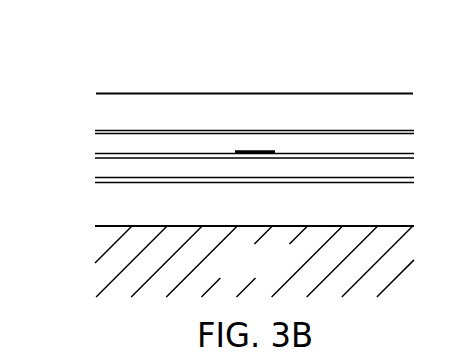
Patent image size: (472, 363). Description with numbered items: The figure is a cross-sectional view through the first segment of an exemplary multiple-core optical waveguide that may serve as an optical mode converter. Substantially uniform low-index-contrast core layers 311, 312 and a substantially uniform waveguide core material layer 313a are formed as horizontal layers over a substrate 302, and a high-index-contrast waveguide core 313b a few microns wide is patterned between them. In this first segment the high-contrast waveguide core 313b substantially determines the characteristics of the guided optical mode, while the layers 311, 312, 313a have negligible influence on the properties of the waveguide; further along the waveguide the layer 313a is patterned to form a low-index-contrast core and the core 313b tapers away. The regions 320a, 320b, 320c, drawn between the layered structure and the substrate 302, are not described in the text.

The substrate 302 is at (268, 272).
The low-index-contrast core layer 311 is at (301, 180).
The low-index-contrast core layer 312 is at (192, 135).
The waveguide core material layer 313a is at (279, 155).
The high-index-contrast waveguide core 313b is at (244, 151).
The first gap region 320a is at (130, 208).
The second gap region 320b is at (373, 168).
The third gap region 320c is at (131, 113).